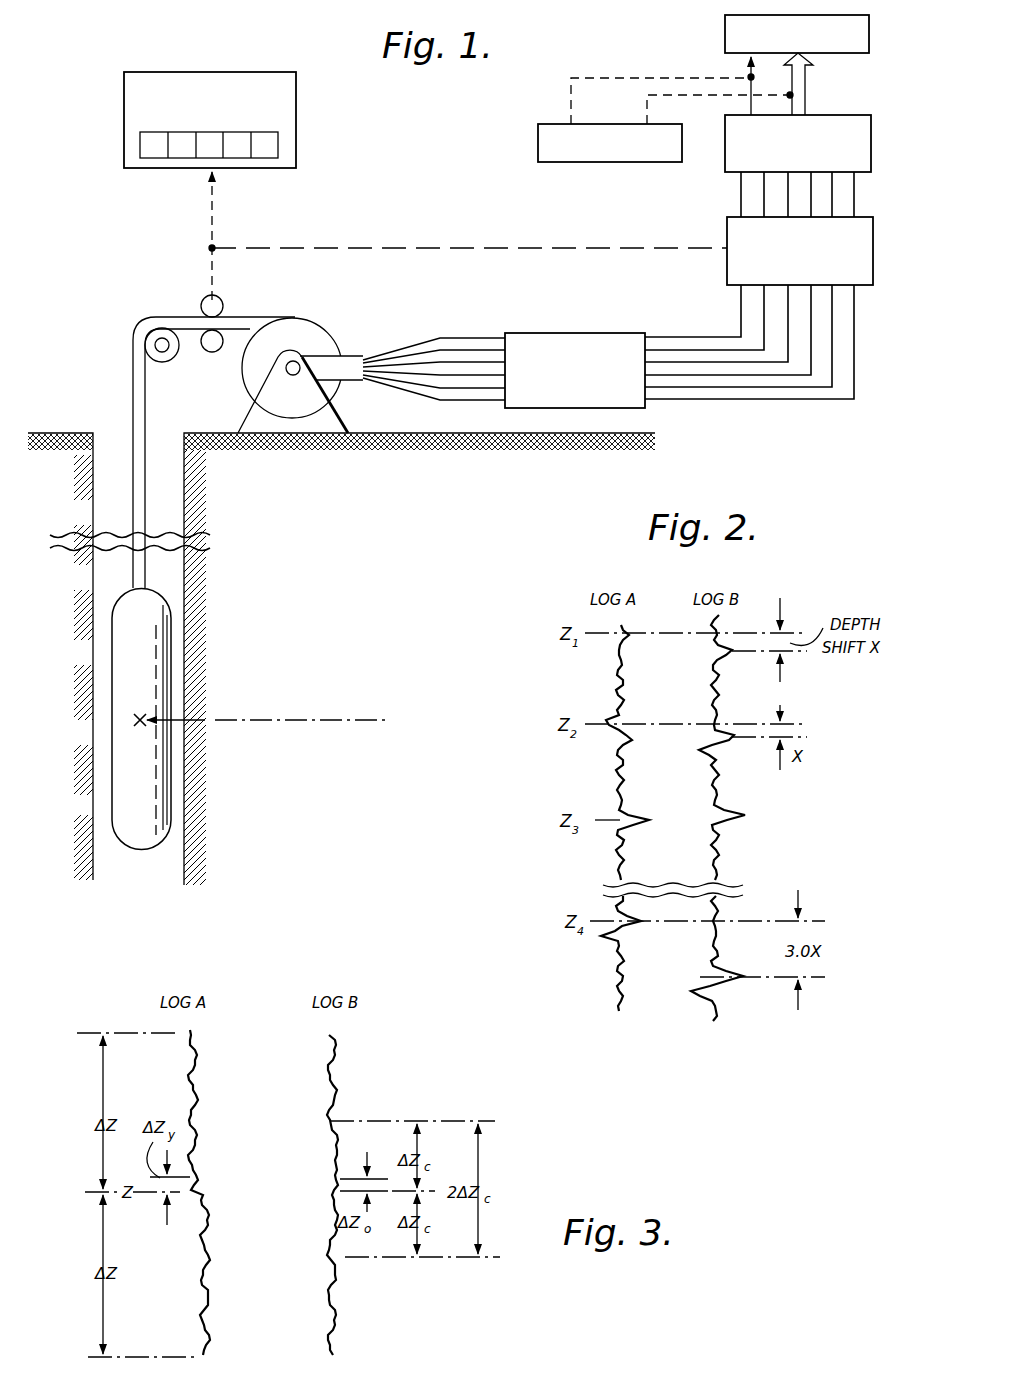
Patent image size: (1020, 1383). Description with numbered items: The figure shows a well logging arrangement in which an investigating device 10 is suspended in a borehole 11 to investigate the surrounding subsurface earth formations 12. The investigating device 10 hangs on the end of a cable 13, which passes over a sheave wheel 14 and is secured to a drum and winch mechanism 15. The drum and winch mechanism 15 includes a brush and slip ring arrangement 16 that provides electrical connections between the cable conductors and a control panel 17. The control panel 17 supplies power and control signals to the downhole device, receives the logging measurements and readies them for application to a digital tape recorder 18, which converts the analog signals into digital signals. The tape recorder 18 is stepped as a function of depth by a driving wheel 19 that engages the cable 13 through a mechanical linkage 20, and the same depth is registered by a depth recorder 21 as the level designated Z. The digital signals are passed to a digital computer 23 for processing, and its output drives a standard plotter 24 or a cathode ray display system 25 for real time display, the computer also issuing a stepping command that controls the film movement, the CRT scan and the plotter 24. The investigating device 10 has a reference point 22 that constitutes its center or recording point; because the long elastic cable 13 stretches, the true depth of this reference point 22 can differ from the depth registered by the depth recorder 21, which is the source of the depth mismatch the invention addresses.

The investigating device 10 is at (121, 633).
The borehole 11 is at (185, 563).
The subsurface earth formations 12 is at (248, 804).
The cable 13 is at (143, 410).
The sheave wheel 14 is at (173, 355).
The drum and winch mechanism 15 is at (323, 420).
The brush and slip ring arrangement 16 is at (306, 343).
The control panel 17 is at (568, 333).
The digital tape recorder 18 is at (873, 240).
The driving wheel 19 is at (225, 302).
The mechanical linkage 20 is at (543, 250).
The depth recorder 21 is at (298, 112).
The reference point 22 is at (141, 733).
The digital computer 23 is at (871, 135).
The plotter 24 is at (538, 140).
The cathode ray display system 25 is at (869, 40).